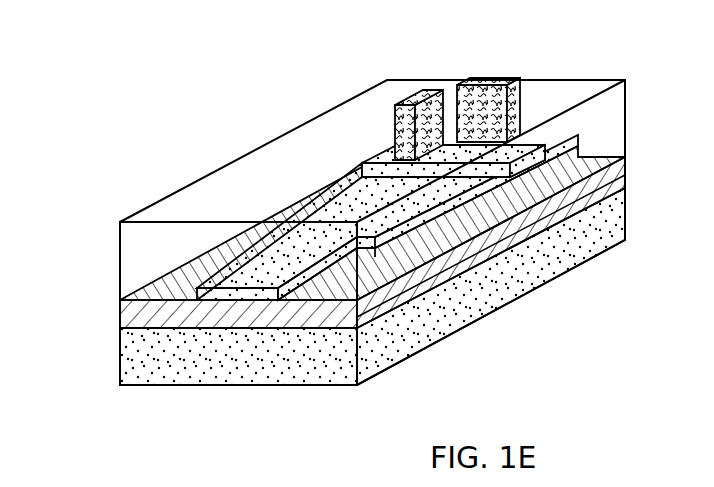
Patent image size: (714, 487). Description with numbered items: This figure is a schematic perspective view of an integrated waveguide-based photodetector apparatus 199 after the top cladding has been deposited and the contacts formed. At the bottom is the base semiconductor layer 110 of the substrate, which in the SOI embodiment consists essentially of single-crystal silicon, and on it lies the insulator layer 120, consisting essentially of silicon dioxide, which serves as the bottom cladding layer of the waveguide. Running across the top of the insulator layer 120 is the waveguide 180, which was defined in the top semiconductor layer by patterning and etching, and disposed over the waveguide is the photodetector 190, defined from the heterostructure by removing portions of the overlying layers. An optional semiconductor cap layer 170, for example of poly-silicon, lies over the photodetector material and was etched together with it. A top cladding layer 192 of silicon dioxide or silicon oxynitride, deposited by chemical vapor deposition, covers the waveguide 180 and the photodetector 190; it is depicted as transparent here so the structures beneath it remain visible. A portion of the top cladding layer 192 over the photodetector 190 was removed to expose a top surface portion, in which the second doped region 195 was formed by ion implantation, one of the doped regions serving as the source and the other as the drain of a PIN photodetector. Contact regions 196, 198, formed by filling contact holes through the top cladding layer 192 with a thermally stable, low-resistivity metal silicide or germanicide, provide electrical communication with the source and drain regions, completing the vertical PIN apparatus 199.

The base semiconductor layer 110 is at (125, 368).
The insulator layer 120 is at (125, 311).
The semiconductor cap layer 170 is at (360, 166).
The waveguide 180 is at (237, 296).
The photodetector 190 is at (490, 180).
The top cladding layer 192 is at (612, 78).
The second doped region 195 is at (380, 158).
The contact region 196 is at (490, 82).
The contact region 198 is at (419, 98).
The integrated waveguide-based photodetector apparatus 199 is at (112, 136).